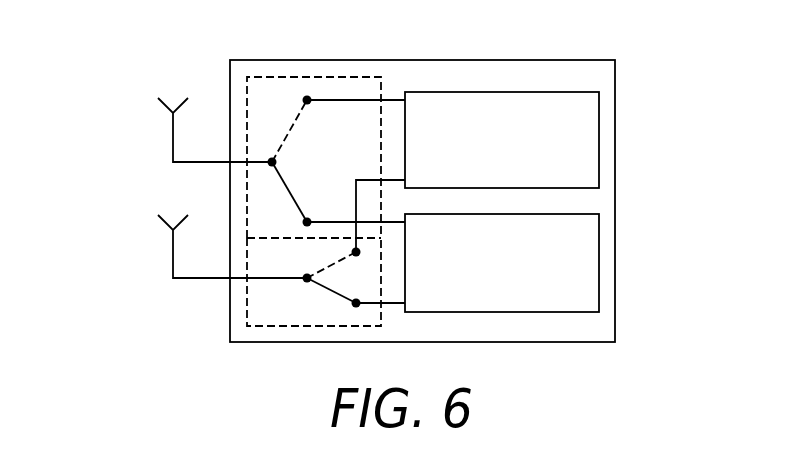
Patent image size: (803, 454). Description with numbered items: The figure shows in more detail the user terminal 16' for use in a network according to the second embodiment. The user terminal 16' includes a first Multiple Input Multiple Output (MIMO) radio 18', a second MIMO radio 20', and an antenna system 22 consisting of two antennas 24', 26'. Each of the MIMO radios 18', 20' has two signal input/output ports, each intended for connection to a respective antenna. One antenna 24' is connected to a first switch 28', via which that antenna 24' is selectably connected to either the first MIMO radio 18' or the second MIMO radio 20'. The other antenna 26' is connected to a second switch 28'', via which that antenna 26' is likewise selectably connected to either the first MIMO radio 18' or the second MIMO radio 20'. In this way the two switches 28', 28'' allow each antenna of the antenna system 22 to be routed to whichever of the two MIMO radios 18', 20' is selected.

The user terminal 16' is at (473, 201).
The first Multiple Input Multiple Output (MIMO) radio 18' is at (541, 263).
The second MIMO radio 20' is at (502, 100).
The antenna system 22 is at (141, 188).
The antenna 24' is at (161, 246).
The antenna 26' is at (161, 130).
The first switch 28' is at (317, 287).
The second switch 28'' is at (317, 125).